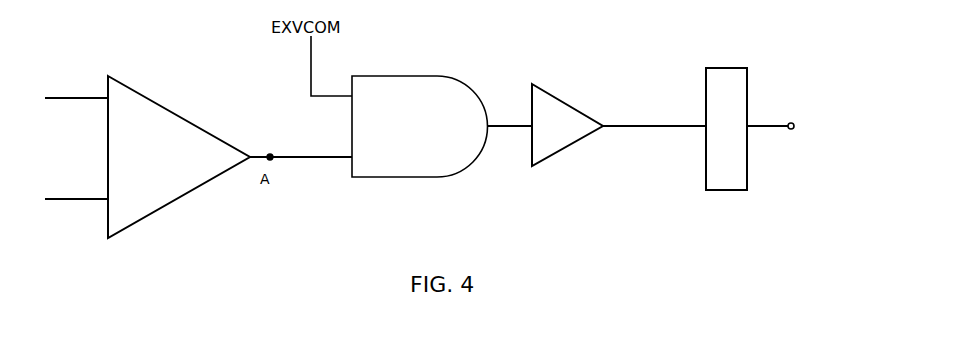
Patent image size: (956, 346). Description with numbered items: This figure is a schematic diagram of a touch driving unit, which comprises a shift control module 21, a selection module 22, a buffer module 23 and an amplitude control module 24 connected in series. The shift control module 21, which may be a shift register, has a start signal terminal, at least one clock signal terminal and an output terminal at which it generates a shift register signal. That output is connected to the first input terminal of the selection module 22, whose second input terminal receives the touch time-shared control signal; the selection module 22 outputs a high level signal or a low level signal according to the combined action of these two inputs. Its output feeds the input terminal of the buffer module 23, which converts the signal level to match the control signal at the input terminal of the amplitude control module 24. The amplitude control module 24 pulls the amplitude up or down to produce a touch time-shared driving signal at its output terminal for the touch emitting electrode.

The shift control module 21 is at (137, 90).
The selection module 22 is at (412, 76).
The buffer module 23 is at (543, 88).
The amplitude control module 24 is at (721, 68).